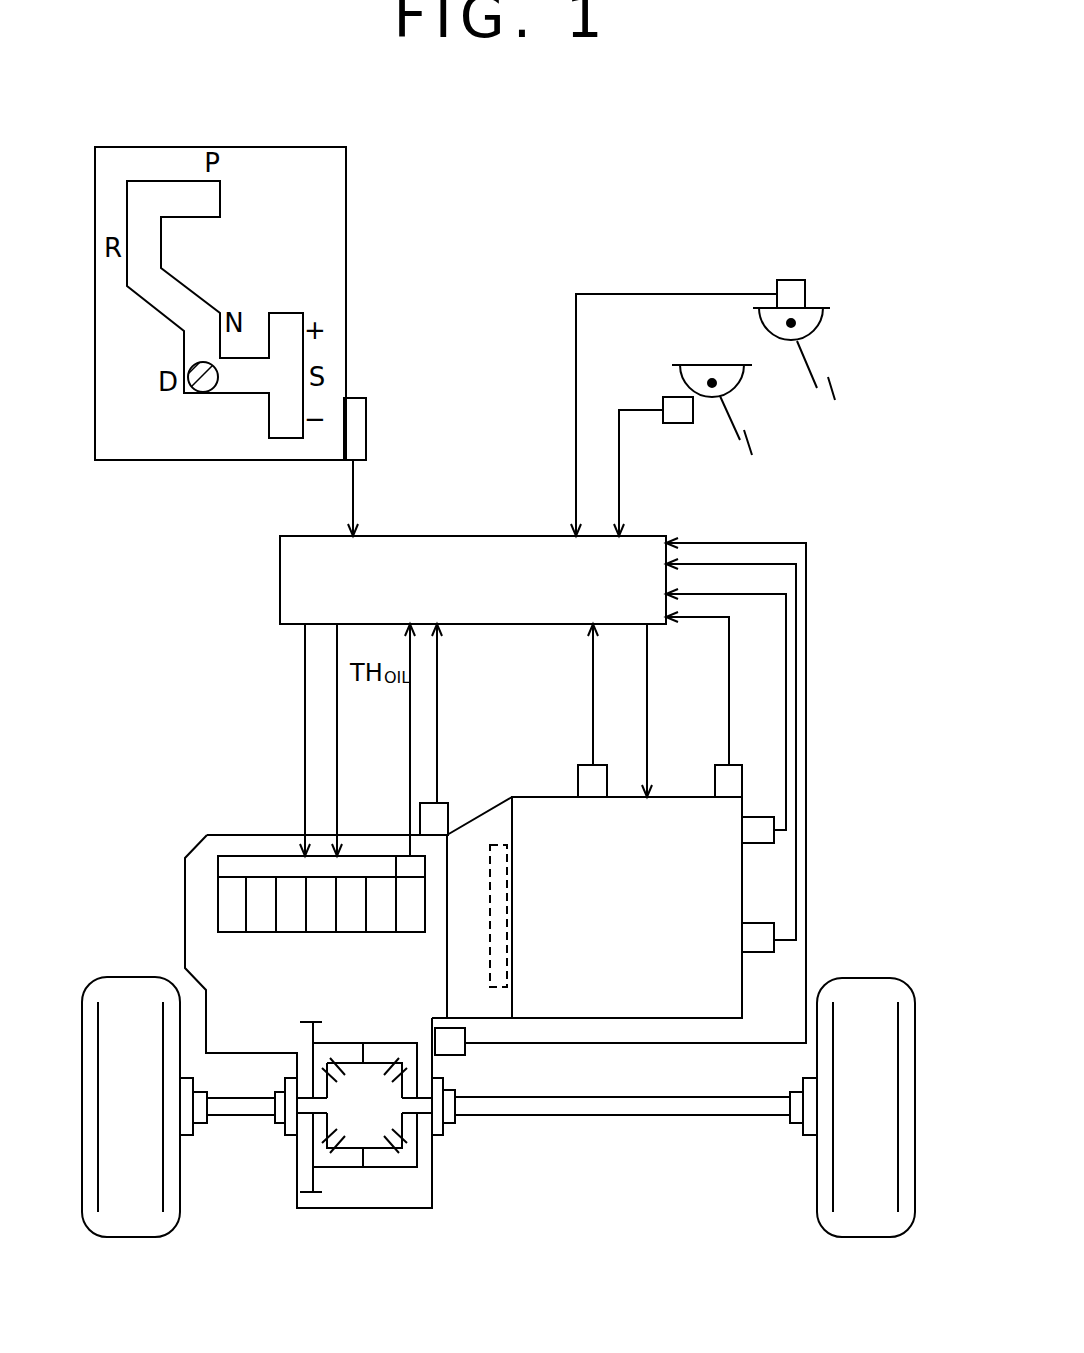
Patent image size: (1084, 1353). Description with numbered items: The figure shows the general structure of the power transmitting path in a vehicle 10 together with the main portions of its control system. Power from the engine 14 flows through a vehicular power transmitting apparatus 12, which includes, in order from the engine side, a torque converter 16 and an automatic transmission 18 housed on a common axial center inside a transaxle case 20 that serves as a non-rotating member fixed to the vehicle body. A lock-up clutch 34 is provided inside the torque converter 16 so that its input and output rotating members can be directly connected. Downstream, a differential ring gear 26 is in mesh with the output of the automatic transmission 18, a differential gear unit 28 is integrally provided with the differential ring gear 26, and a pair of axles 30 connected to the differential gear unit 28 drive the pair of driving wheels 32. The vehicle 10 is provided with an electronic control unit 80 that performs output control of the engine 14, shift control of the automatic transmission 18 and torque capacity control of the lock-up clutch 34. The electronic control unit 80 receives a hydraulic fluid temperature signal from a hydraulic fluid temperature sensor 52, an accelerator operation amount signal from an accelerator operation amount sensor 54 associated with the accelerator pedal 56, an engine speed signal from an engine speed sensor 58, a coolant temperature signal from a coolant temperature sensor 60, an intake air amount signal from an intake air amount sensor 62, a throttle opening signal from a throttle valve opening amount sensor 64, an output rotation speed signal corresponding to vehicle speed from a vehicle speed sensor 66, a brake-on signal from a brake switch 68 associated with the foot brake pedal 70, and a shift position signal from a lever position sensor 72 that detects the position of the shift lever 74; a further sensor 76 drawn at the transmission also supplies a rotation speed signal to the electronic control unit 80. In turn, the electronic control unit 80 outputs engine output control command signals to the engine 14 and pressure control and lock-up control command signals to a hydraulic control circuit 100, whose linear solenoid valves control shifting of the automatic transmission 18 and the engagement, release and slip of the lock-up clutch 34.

The vehicle 10 is at (677, 157).
The vehicular power transmitting apparatus 12 is at (168, 683).
The engine 14 is at (687, 808).
The torque converter 16 is at (481, 833).
The automatic transmission 18 is at (197, 910).
The transaxle case 20 is at (245, 835).
The differential ring gear 26 is at (316, 1195).
The differential gear unit 28 is at (421, 1191).
The axles 30 is at (233, 1107).
The driving wheels 32 is at (128, 1220).
The lock-up clutch 34 is at (508, 857).
The hydraulic fluid temperature sensor 52 is at (405, 862).
The accelerator operation amount sensor 54 is at (787, 285).
The accelerator pedal 56 is at (833, 397).
The engine speed sensor 58 is at (758, 843).
The coolant temperature sensor 60 is at (577, 768).
The intake air amount sensor 62 is at (758, 952).
The throttle valve opening amount sensor 64 is at (745, 777).
The vehicle speed sensor 66 is at (447, 1057).
The brake switch 68 is at (678, 419).
The foot brake pedal 70 is at (750, 448).
The lever position sensor 72 is at (357, 405).
The shift lever 74 is at (198, 384).
The turbine speed sensor 76 is at (443, 805).
The electronic control unit 80 is at (442, 550).
The hydraulic control circuit 100 is at (230, 867).